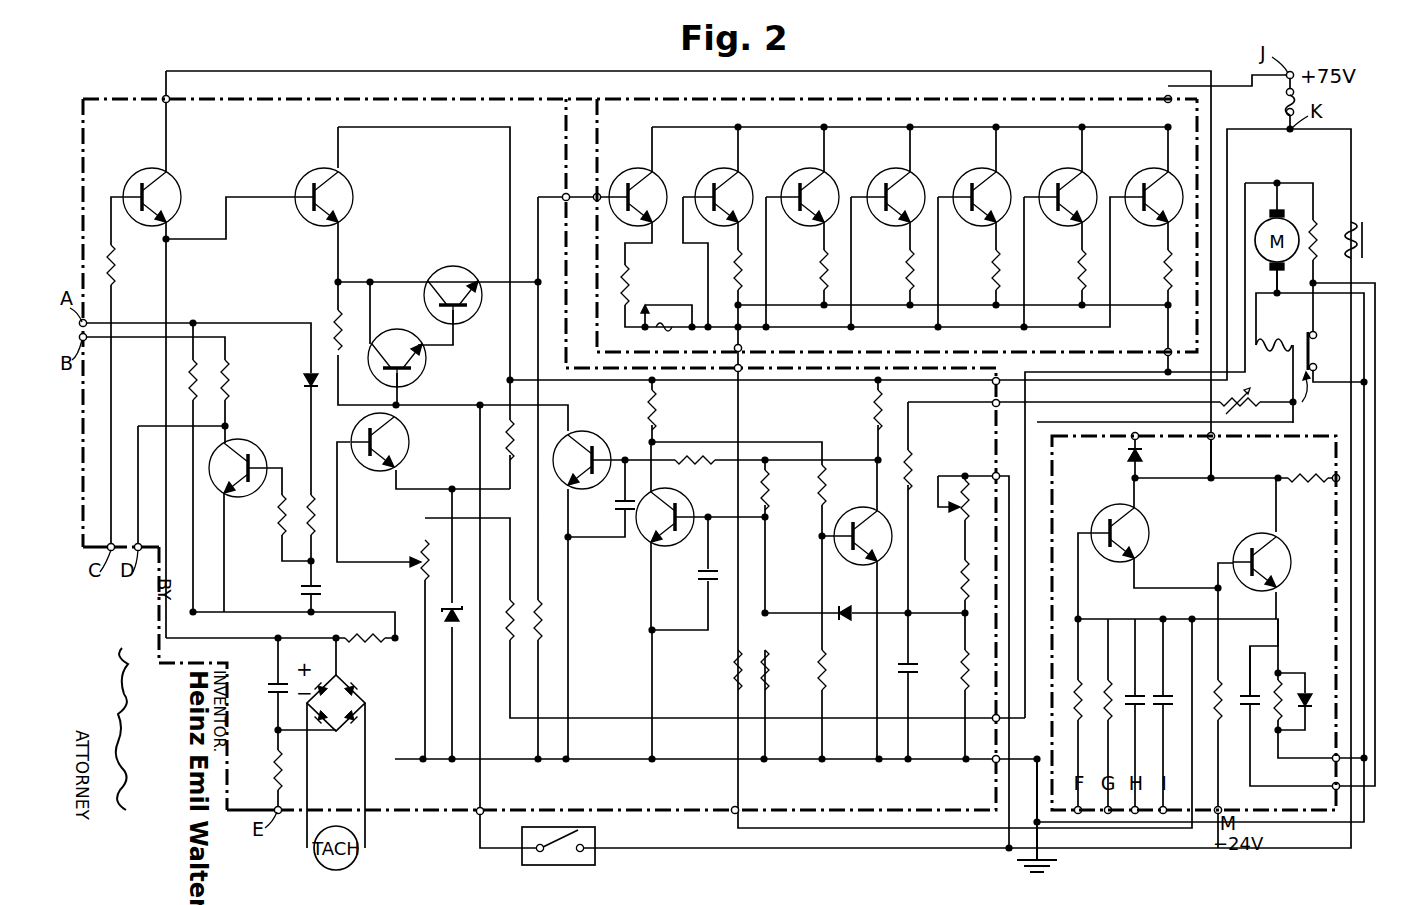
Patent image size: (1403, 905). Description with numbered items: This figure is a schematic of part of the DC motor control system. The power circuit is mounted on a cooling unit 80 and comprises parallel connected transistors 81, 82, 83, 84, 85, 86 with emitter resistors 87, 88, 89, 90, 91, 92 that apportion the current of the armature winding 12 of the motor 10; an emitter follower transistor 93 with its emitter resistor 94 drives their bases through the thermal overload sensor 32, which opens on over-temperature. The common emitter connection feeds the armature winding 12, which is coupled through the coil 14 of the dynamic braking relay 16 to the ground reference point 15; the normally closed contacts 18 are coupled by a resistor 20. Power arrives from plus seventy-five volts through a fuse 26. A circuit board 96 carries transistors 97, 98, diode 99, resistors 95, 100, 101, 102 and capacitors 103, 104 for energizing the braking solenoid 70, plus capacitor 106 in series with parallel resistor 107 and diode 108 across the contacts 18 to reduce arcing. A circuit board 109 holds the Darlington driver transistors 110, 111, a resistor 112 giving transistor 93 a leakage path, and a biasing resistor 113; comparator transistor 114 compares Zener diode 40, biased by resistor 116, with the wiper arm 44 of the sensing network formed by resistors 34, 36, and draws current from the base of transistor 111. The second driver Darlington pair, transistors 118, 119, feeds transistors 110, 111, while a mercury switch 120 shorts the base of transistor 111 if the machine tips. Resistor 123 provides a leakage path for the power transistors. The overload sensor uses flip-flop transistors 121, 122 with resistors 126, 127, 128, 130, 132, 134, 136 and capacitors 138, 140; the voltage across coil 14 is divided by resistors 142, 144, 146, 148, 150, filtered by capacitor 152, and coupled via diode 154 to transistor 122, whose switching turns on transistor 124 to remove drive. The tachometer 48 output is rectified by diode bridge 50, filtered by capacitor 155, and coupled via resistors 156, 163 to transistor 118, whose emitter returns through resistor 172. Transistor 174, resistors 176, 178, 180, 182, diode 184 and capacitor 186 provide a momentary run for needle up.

The motor 10 is at (1288, 222).
The armature winding 12 is at (1276, 268).
The coil of the dynamic braking relay 14 is at (1274, 344).
The ground reference point 15 is at (1050, 866).
The dynamic braking relay 16 is at (1316, 392).
The normally closed contacts 18 is at (1312, 344).
The resistor 20 is at (1316, 246).
The fuse 26 is at (1286, 105).
The thermal overload sensor 32 is at (640, 330).
The resistor 34 is at (510, 644).
The resistor 36 is at (418, 574).
The Zener diode 40 is at (450, 623).
The wiper arm 44 is at (339, 522).
The tachometer 48 is at (358, 856).
The diode bridge 50 is at (336, 703).
The braking solenoid 70 is at (1346, 230).
The cooling unit 80 is at (866, 100).
The transistor 81 is at (712, 170).
The transistor 82 is at (798, 170).
The transistor 83 is at (884, 170).
The transistor 84 is at (970, 170).
The transistor 85 is at (1056, 170).
The transistor 86 is at (1142, 170).
The emitter resistor 87 is at (734, 274).
The emitter resistor 88 is at (818, 264).
The emitter resistor 89 is at (904, 264).
The emitter resistor 90 is at (990, 264).
The emitter resistor 91 is at (1076, 264).
The emitter resistor 92 is at (1162, 264).
The transistor 93 is at (630, 170).
The emitter resistor 94 is at (630, 283).
The resistor 95 is at (1300, 474).
The circuit board 96 is at (1300, 820).
The transistor 97 is at (1152, 514).
The transistor 98 is at (1288, 552).
The diode 99 is at (1126, 456).
The resistor 100 is at (1080, 676).
The resistor 101 is at (1110, 678).
The resistor 102 is at (1220, 678).
The capacitor 103 is at (1138, 686).
The capacitor 104 is at (1166, 686).
The capacitor 106 is at (1252, 718).
The resistor 107 is at (1282, 684).
The diode 108 is at (1312, 702).
The circuit board 109 is at (142, 96).
The first driver circuit transistor 110 is at (462, 266).
The first driver circuit transistor 111 is at (428, 358).
The resistor 112 is at (542, 612).
The biasing resistor 113 is at (332, 324).
The transistor 114 is at (408, 447).
The resistor 116 is at (510, 452).
The transistor 118 is at (164, 184).
The transistor 119 is at (340, 184).
The mercury switch 120 is at (595, 835).
The transistor 121 is at (856, 562).
The transistor 122 is at (642, 538).
The resistor 123 is at (734, 668).
The transistor 124 is at (592, 434).
The resistor 126 is at (659, 412).
The resistor 127 is at (876, 408).
The resistor 128 is at (828, 486).
The resistor 130 is at (826, 672).
The resistor 132 is at (768, 672).
The resistor 134 is at (772, 486).
The resistor 136 is at (684, 464).
The capacitor 138 is at (618, 508).
The capacitor 140 is at (704, 588).
The resistor 142 is at (916, 458).
The resistor 144 is at (1250, 390).
The variable resistor 146 is at (960, 512).
The resistor 148 is at (962, 564).
The resistor 150 is at (964, 684).
The capacitor 152 is at (920, 676).
The diode 154 is at (846, 622).
The capacitor 155 is at (278, 681).
The resistor 156 is at (278, 767).
The resistor 163 is at (117, 264).
The resistor 172 is at (367, 640).
The transistor 174 is at (241, 439).
The resistor 176 is at (228, 374).
The resistor 178 is at (190, 373).
The resistor 180 is at (282, 524).
The resistor 182 is at (310, 498).
The diode 184 is at (302, 378).
The capacitor 186 is at (304, 596).